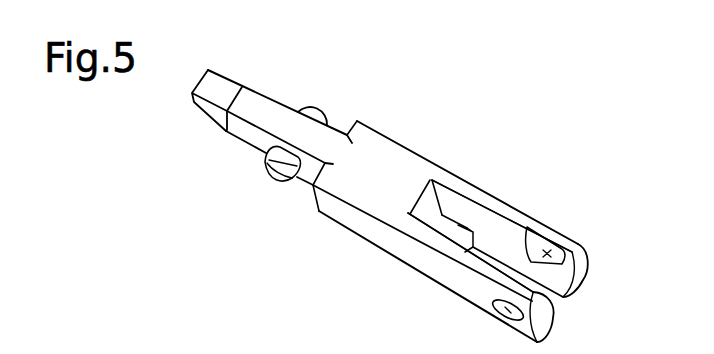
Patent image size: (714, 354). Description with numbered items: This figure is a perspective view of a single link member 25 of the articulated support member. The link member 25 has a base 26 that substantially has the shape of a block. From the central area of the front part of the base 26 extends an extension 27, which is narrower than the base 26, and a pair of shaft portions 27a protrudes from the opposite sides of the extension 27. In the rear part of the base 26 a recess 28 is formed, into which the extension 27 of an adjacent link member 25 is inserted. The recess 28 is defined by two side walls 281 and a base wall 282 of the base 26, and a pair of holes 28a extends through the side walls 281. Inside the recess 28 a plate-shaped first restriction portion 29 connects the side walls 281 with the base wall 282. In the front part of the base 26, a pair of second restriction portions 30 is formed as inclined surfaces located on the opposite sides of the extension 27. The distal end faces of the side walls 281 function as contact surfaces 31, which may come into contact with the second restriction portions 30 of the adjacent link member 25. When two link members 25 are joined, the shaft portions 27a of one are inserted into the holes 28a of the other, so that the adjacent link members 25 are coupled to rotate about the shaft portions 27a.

The link member 25 is at (541, 140).
The base 26 is at (413, 145).
The extension 27 is at (262, 90).
The shaft portions 27a is at (267, 196).
The recess 28 is at (495, 228).
The holes 28a is at (545, 241).
The side walls 281 is at (518, 217).
The base wall 282 is at (431, 177).
The first restriction portion 29 is at (456, 224).
The second restriction portions 30 is at (315, 186).
The contact surfaces 31 is at (587, 279).